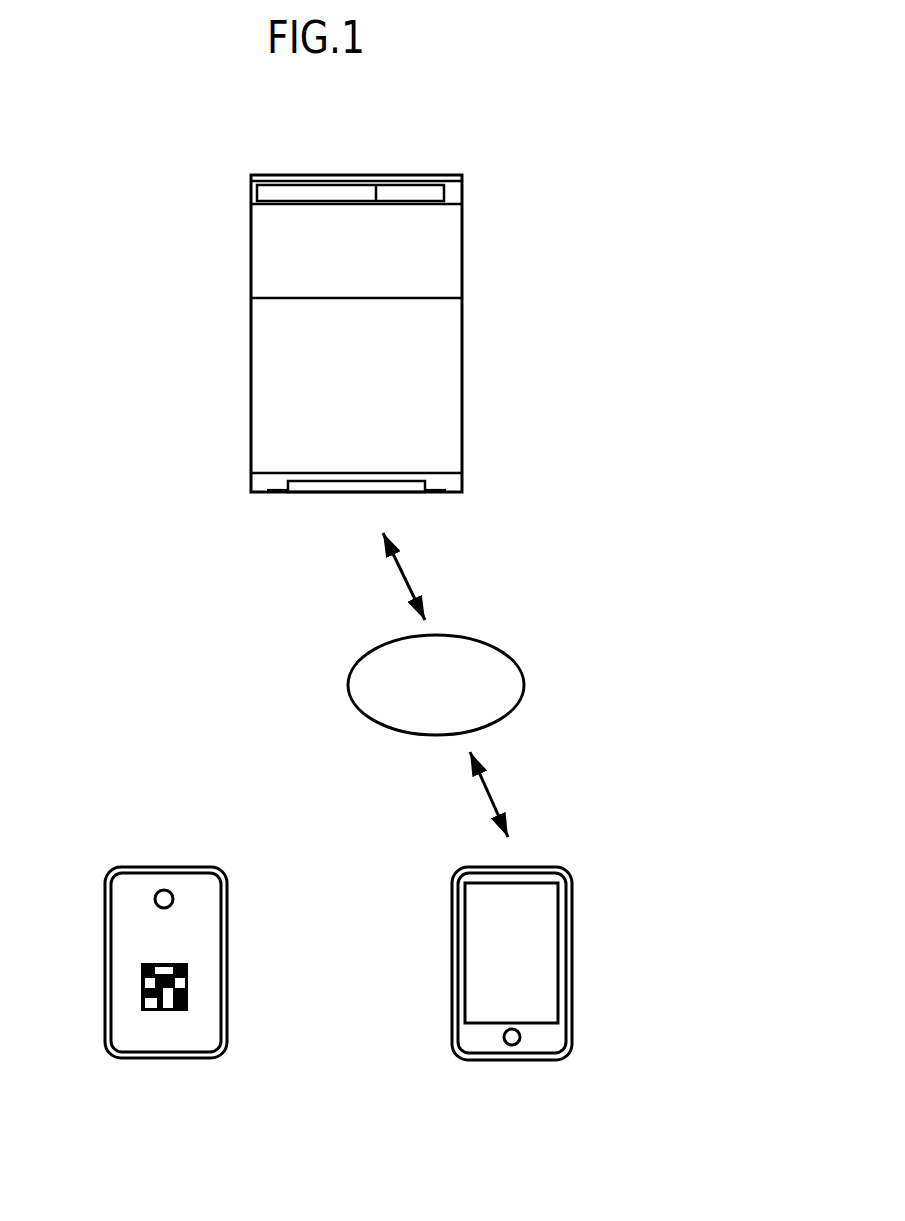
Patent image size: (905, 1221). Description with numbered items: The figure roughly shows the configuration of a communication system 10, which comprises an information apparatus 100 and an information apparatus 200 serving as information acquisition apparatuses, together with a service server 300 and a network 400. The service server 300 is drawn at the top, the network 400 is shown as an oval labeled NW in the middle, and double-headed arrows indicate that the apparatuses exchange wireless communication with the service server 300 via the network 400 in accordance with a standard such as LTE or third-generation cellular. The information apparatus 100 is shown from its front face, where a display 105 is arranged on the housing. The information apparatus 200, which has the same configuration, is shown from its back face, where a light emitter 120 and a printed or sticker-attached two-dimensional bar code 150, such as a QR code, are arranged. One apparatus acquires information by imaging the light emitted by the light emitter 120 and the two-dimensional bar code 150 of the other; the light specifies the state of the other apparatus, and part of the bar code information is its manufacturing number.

The communication system 10 is at (152, 312).
The service server 300 is at (437, 173).
The network (NW) 400 is at (497, 643).
The information apparatus 100 is at (499, 937).
The display 105 is at (468, 963).
The information apparatus 200 is at (160, 944).
The light emitter 120 is at (160, 892).
The two-dimensional bar code 150 is at (142, 987).